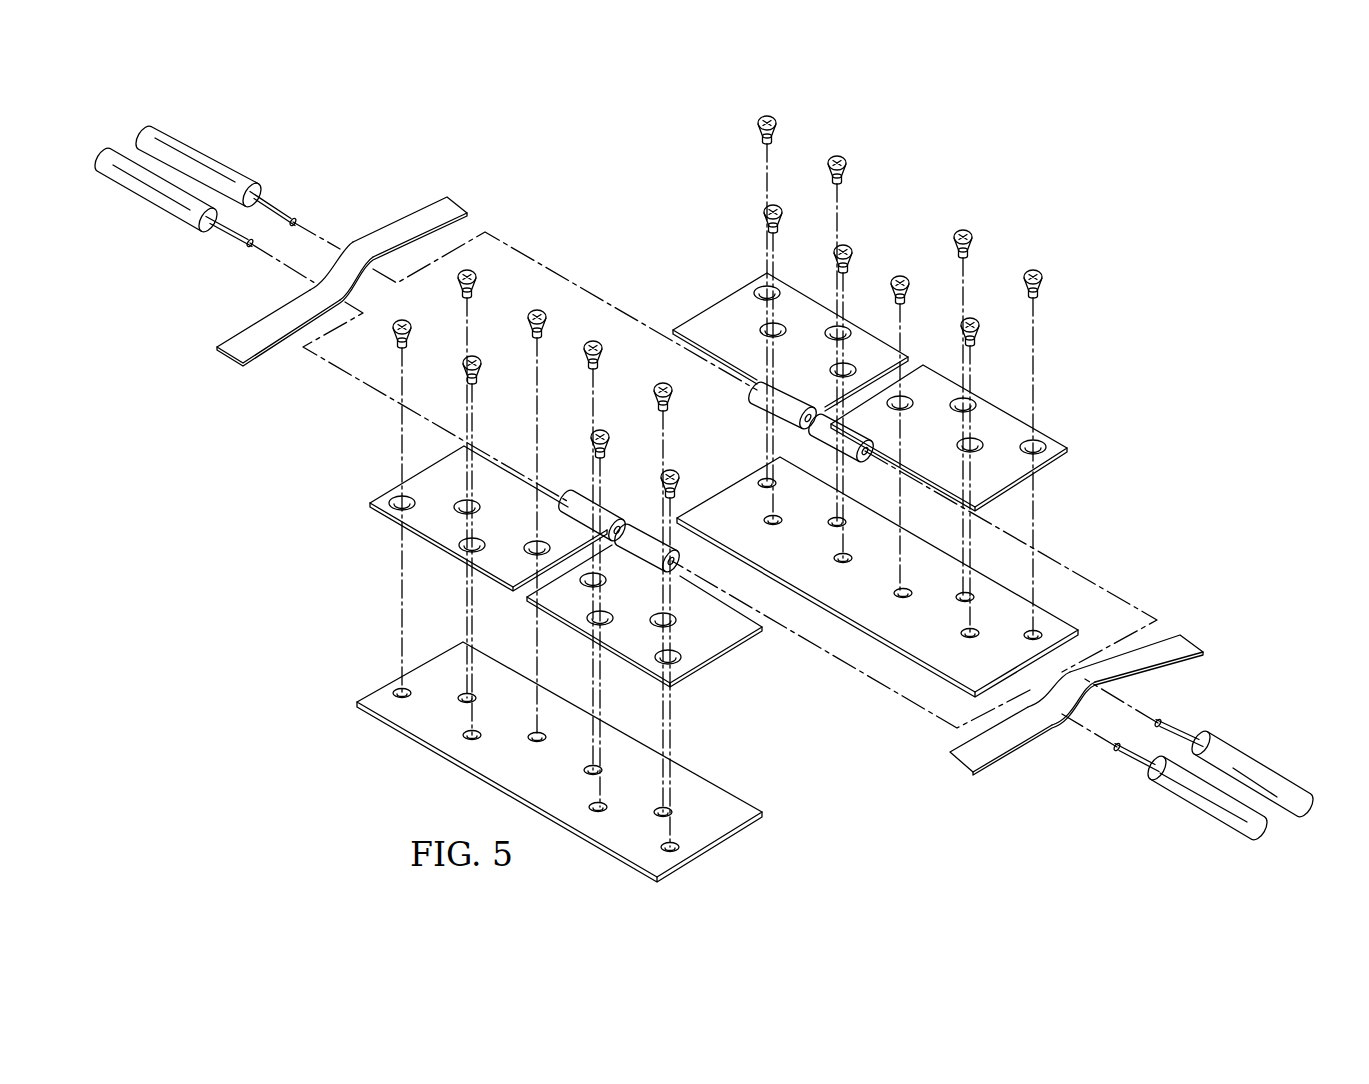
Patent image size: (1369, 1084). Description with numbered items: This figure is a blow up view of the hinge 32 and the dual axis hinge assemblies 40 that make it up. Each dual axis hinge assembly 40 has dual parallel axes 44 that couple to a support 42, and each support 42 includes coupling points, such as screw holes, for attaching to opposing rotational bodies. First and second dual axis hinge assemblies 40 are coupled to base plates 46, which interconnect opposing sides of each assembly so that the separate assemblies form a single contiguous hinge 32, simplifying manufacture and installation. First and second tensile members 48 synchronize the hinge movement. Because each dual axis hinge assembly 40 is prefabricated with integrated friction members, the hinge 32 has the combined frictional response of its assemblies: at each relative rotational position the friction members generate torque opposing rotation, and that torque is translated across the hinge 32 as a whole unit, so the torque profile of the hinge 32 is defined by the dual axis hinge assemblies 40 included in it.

The hinge 32 is at (1108, 218).
The dual axis hinge assembly 40 is at (193, 162).
The support 42 is at (795, 302).
The dual parallel axes 44 is at (270, 208).
The base plate 46 is at (707, 793).
The tensile member 48 is at (448, 208).